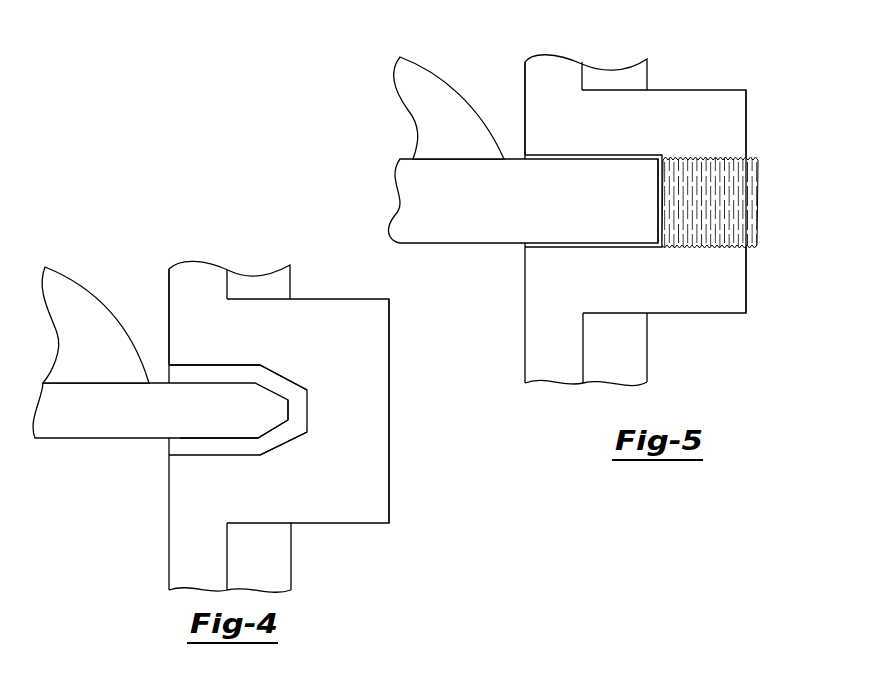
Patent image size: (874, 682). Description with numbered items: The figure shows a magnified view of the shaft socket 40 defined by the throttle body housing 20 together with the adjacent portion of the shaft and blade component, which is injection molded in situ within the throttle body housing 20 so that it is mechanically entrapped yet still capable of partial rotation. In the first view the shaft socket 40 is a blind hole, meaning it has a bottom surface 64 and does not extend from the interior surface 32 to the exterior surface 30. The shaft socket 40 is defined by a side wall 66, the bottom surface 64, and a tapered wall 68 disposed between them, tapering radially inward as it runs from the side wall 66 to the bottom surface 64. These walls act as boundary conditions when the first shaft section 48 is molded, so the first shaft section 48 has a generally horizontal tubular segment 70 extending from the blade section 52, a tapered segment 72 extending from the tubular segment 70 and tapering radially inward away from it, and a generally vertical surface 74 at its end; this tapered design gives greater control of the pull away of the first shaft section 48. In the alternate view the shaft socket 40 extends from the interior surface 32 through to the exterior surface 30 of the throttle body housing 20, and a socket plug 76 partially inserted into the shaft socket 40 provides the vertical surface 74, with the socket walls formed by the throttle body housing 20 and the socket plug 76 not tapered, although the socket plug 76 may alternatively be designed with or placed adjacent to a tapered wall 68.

In FIG. 4, the throttle body housing 20 is at (382, 337).
In FIG. 5, the throttle body housing 20 is at (725, 98).
In FIG. 4, the exterior surface 30 is at (389, 485).
In FIG. 5, the exterior surface 30 is at (746, 123).
In FIG. 4, the interior surface 32 is at (167, 285).
In FIG. 5, the interior surface 32 is at (526, 76).
In FIG. 4, the shaft socket 40 is at (297, 403).
In FIG. 5, the shaft socket 40 is at (611, 157).
In FIG. 4, the first shaft section 48 is at (100, 430).
In FIG. 5, the first shaft section 48 is at (460, 233).
In FIG. 4, the blade section 52 is at (73, 300).
In FIG. 5, the blade section 52 is at (437, 95).
In FIG. 4, the bottom surface 64 is at (305, 424).
In FIG. 4, the side wall 66 is at (222, 365).
In FIG. 4, the tapered wall 68 is at (285, 378).
In FIG. 4, the generally horizontal tubular segment 70 is at (203, 438).
In FIG. 4, the tapered segment 72 is at (265, 438).
In FIG. 4, the generally vertical surface 74 is at (290, 413).
In FIG. 5, the generally vertical surface 74 is at (658, 210).
In FIG. 5, the socket plug 76 is at (752, 198).